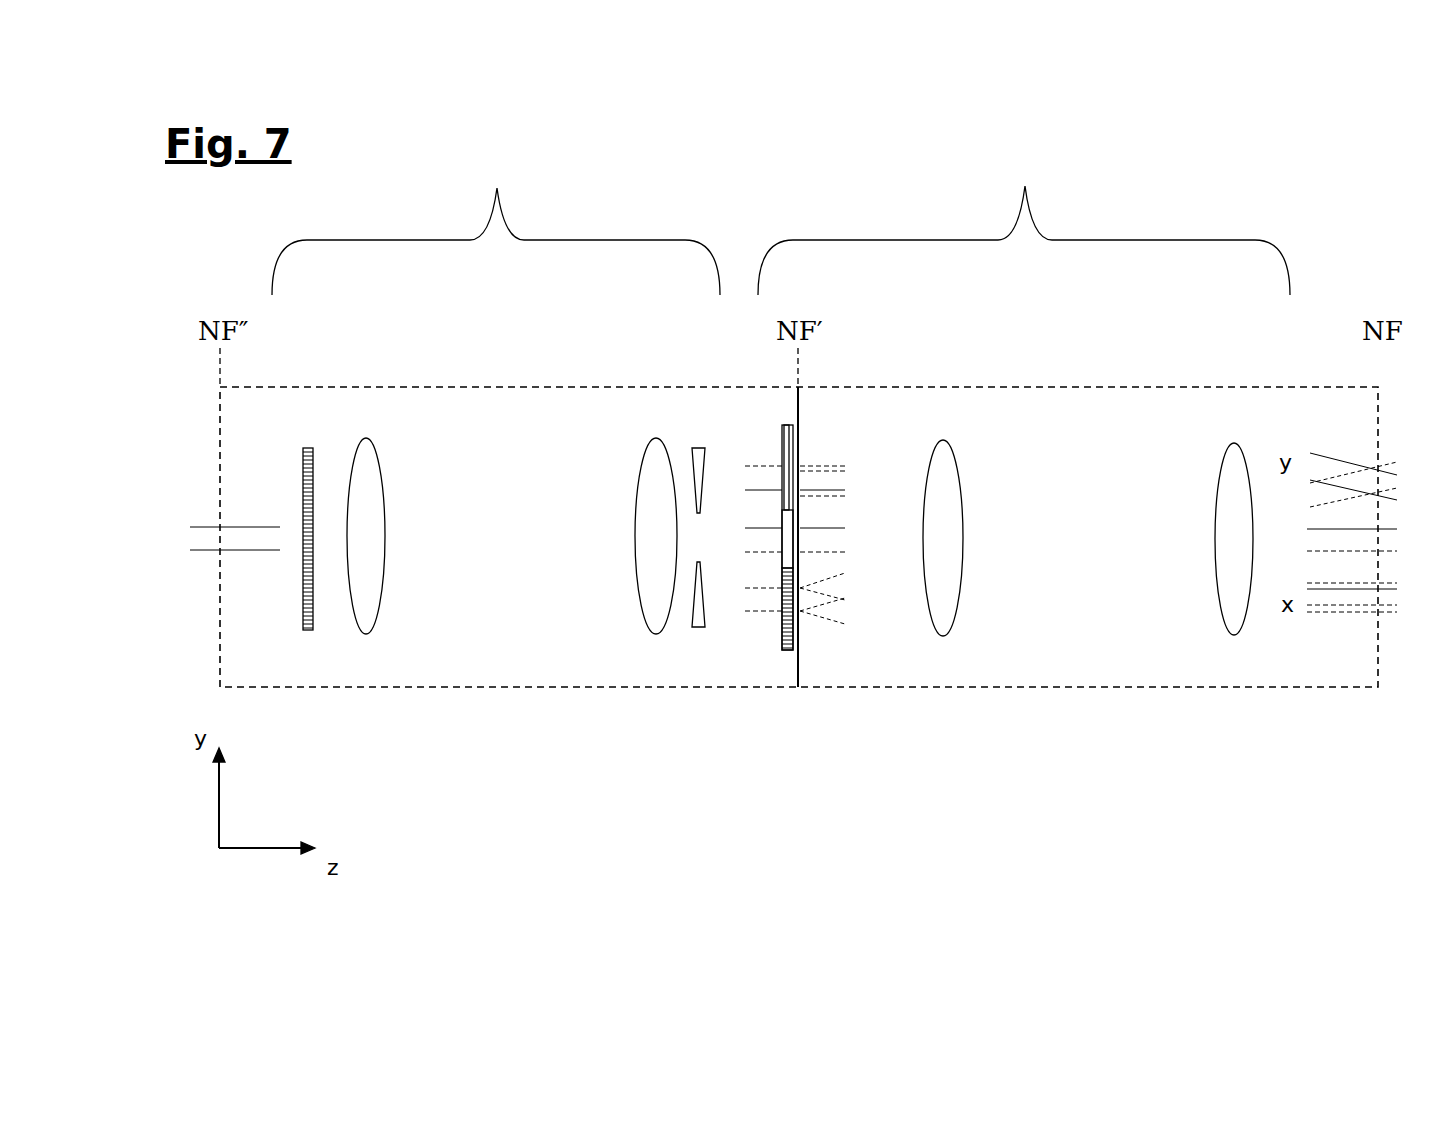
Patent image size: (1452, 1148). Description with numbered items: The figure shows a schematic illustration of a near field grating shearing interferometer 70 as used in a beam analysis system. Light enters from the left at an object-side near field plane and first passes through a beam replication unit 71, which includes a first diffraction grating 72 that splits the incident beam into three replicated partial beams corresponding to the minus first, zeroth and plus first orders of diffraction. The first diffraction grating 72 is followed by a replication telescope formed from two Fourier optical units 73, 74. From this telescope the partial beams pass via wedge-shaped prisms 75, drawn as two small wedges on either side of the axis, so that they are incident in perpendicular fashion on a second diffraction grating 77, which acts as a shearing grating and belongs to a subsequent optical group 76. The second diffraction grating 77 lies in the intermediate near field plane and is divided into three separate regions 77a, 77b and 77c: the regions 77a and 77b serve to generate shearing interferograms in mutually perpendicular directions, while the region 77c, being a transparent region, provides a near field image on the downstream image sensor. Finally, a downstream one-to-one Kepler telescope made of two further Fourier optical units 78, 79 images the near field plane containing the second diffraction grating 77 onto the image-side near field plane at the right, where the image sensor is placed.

The near field grating shearing interferometer 70 is at (785, 200).
The beam replication unit 71 is at (496, 226).
The first diffraction grating 72 is at (303, 408).
The Fourier optical unit 73 is at (370, 465).
The Fourier optical unit 74 is at (655, 455).
The wedge-shaped prisms 75 is at (697, 658).
The optical group 76 is at (1024, 226).
The second diffraction grating 77 is at (788, 588).
The region of the second diffraction grating 77a is at (782, 458).
The region of the second diffraction grating 77b is at (782, 610).
The transparent region 77c is at (784, 514).
The Fourier optical unit 78 is at (945, 455).
The Fourier optical unit 79 is at (1230, 455).